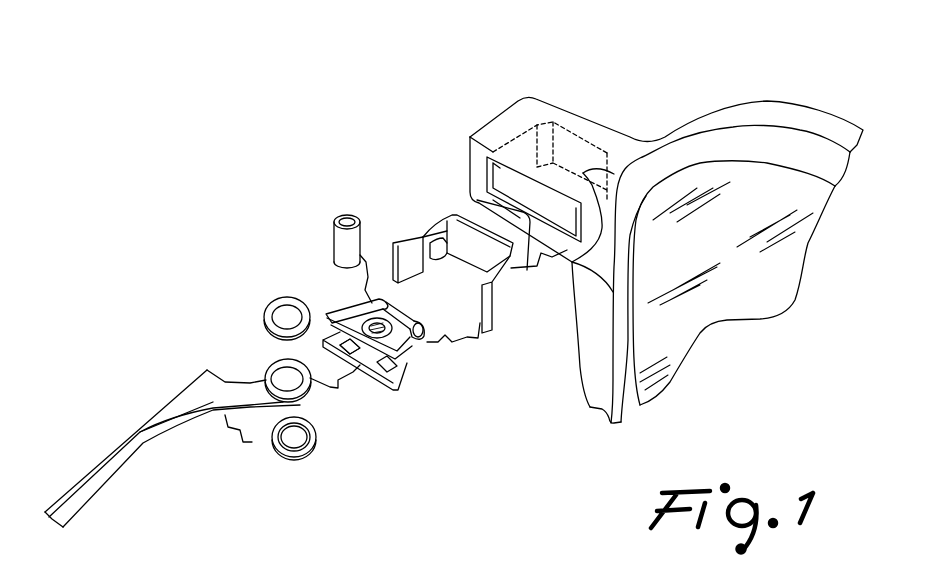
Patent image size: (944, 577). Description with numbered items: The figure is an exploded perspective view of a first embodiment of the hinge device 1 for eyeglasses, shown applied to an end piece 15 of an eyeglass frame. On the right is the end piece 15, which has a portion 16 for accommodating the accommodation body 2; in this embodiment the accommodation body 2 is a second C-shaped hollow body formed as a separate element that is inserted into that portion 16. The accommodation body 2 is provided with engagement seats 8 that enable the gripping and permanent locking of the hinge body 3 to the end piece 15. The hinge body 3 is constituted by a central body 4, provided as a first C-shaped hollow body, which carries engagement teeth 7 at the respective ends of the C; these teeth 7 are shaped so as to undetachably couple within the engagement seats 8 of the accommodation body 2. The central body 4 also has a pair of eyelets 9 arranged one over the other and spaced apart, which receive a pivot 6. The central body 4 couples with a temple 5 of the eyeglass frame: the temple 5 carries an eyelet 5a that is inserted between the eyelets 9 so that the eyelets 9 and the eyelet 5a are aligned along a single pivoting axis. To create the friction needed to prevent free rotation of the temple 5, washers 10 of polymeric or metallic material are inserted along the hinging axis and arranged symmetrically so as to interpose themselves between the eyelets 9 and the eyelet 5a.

The hinge device 1 is at (360, 115).
The accommodation body 2 is at (410, 238).
The hinge body 3 is at (292, 278).
The central body 4 is at (407, 358).
The temple 5 is at (75, 492).
The eyelet 5a is at (277, 368).
The pivot 6 is at (333, 250).
The engagement teeth 7 is at (447, 337).
The engagement seats 8 is at (440, 236).
The eyelets 9 is at (392, 327).
The washers 10 is at (270, 308).
The end piece 15 is at (577, 127).
The portion 16 is at (553, 207).